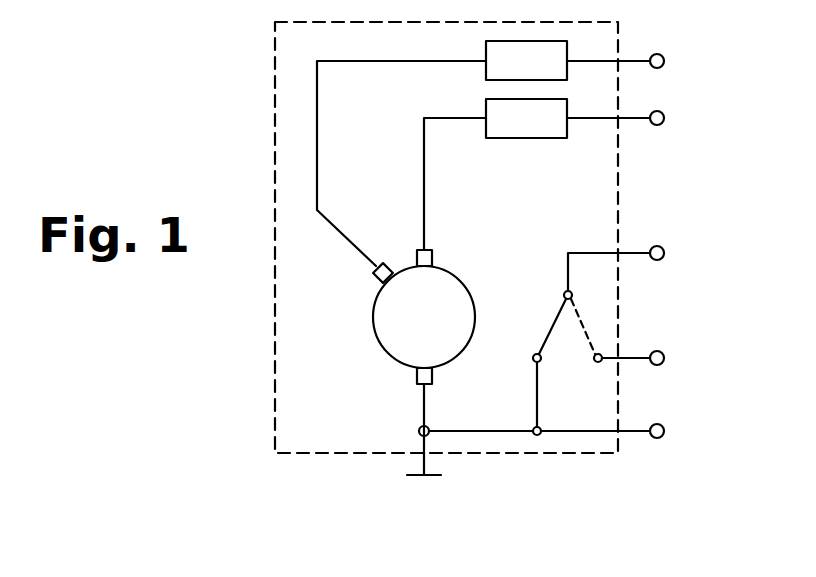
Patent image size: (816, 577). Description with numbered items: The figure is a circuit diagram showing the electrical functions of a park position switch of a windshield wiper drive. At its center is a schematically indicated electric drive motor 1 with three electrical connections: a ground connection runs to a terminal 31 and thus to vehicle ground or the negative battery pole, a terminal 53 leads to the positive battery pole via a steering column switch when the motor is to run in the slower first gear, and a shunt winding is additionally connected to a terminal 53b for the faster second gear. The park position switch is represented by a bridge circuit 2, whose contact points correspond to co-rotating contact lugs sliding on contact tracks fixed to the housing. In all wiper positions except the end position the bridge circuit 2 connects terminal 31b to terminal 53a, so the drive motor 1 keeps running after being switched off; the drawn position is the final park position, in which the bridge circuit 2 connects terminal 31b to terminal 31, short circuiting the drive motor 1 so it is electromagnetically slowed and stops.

The electric drive motor 1 is at (397, 330).
The bridge circuit 2 is at (569, 333).
The terminal 31 is at (568, 429).
The terminal 31b is at (659, 263).
The terminal 53 is at (608, 118).
The terminal 53a is at (676, 357).
The terminal 53b is at (618, 60).